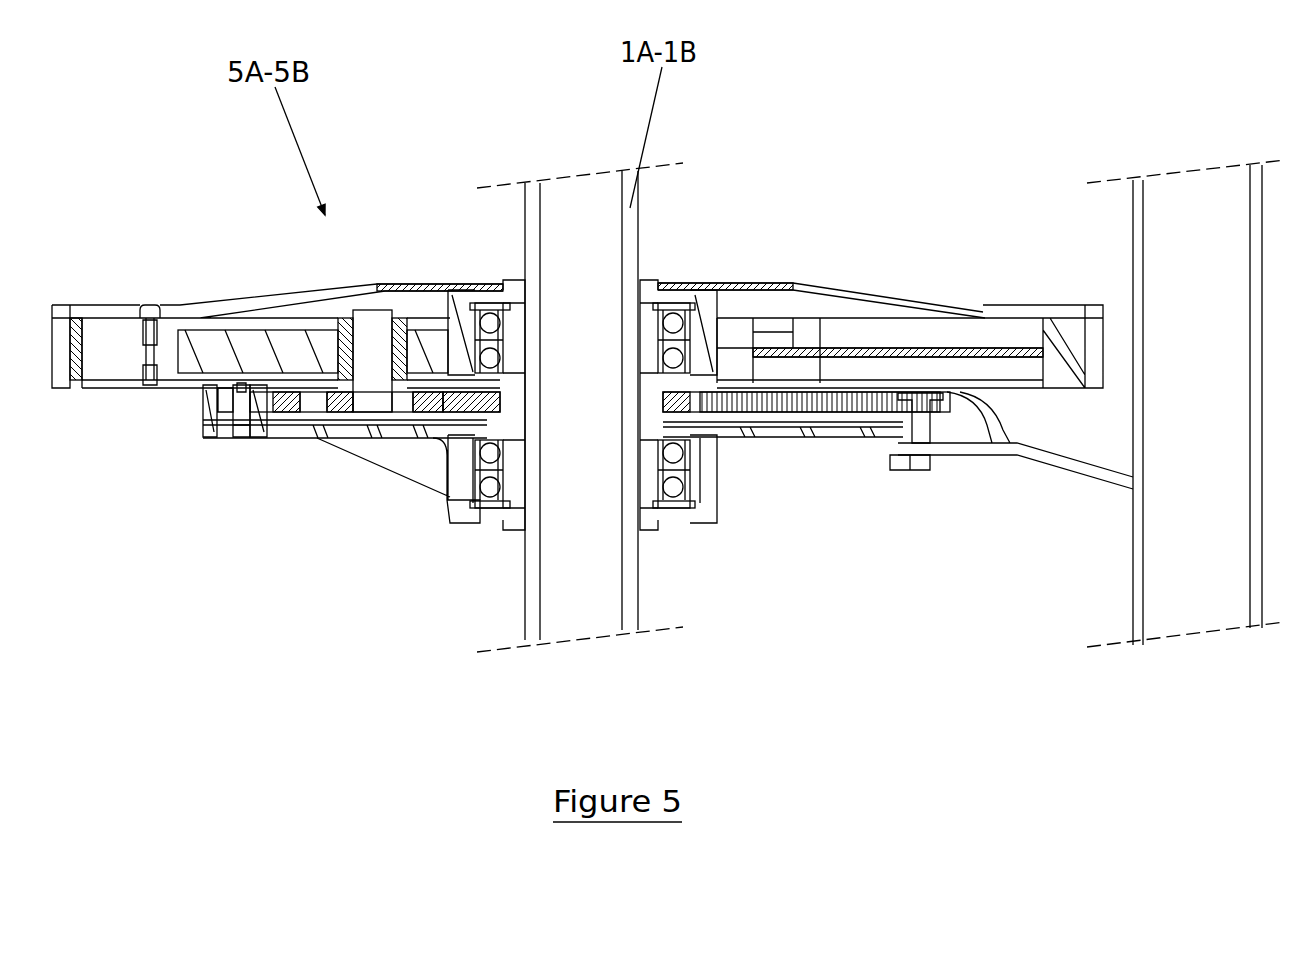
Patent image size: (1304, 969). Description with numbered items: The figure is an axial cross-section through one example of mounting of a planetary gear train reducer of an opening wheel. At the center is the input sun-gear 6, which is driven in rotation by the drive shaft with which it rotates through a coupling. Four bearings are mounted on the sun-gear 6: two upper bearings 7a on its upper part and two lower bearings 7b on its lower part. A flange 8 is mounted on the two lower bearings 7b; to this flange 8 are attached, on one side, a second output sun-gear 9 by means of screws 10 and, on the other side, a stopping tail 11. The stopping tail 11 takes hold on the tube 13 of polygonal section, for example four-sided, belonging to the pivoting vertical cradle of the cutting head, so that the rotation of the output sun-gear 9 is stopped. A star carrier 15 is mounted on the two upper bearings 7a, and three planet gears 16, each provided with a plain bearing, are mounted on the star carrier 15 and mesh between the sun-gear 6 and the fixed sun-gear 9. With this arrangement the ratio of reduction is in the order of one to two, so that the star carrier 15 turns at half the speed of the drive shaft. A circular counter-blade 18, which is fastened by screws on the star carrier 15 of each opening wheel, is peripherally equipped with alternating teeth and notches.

The input sun-gear 6 is at (497, 408).
The upper bearings 7a is at (487, 305).
The lower bearings 7b is at (492, 487).
The flange 8 is at (212, 437).
The second output sun-gear 9 is at (263, 437).
The screws 10 is at (235, 437).
The stopping tail 11 is at (1048, 465).
The tube 13 is at (1135, 262).
The star carrier 15 is at (95, 355).
The planet gears 16 is at (422, 403).
The counter-blade 18 is at (92, 307).